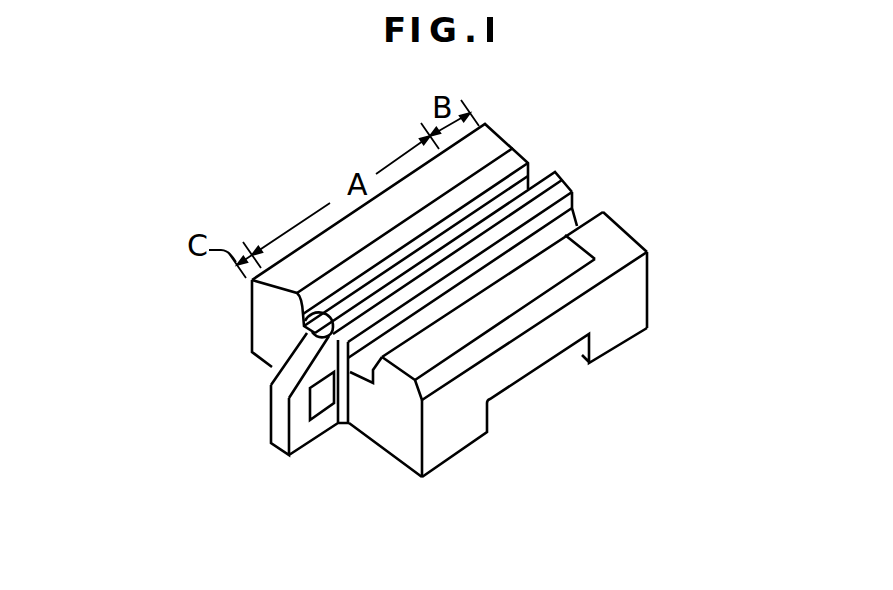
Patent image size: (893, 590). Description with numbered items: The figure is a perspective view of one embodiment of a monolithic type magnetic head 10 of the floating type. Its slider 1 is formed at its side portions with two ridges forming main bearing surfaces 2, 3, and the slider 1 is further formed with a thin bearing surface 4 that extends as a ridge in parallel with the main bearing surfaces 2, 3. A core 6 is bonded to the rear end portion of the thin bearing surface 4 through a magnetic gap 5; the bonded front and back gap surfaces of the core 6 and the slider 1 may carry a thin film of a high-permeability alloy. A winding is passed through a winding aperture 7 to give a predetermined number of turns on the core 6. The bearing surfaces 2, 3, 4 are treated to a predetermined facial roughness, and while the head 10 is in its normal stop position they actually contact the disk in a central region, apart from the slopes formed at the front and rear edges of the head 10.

The monolithic type magnetic head 10 is at (658, 282).
The slider 1 is at (627, 307).
The main bearing surface 2 is at (510, 307).
The main bearing surface 3 is at (460, 170).
The thin bearing surface 4 is at (503, 217).
The magnetic gap 5 is at (305, 321).
The core 6 is at (280, 417).
The winding aperture 7 is at (320, 407).